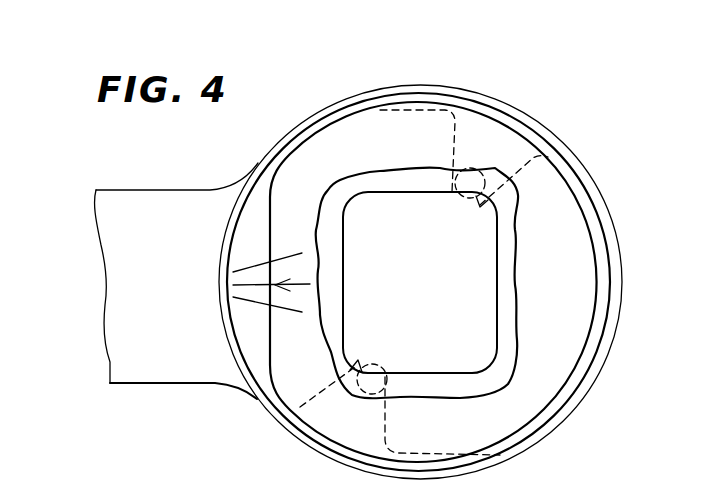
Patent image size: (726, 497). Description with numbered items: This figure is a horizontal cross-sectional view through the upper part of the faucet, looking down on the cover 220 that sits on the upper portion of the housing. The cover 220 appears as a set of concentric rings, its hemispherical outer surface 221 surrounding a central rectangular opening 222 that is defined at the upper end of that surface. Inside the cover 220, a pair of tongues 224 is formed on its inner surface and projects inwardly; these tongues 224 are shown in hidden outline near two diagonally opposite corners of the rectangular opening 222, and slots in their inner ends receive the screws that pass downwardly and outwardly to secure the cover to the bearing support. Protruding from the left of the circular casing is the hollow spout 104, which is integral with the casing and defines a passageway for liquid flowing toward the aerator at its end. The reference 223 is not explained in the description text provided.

The spout 104 is at (147, 210).
The cover 220 is at (566, 144).
The hemispherical outer surface 221 is at (507, 342).
The rectangular opening 222 is at (495, 258).
The intermediate ring 223 is at (605, 272).
The tongues 224 is at (457, 140).